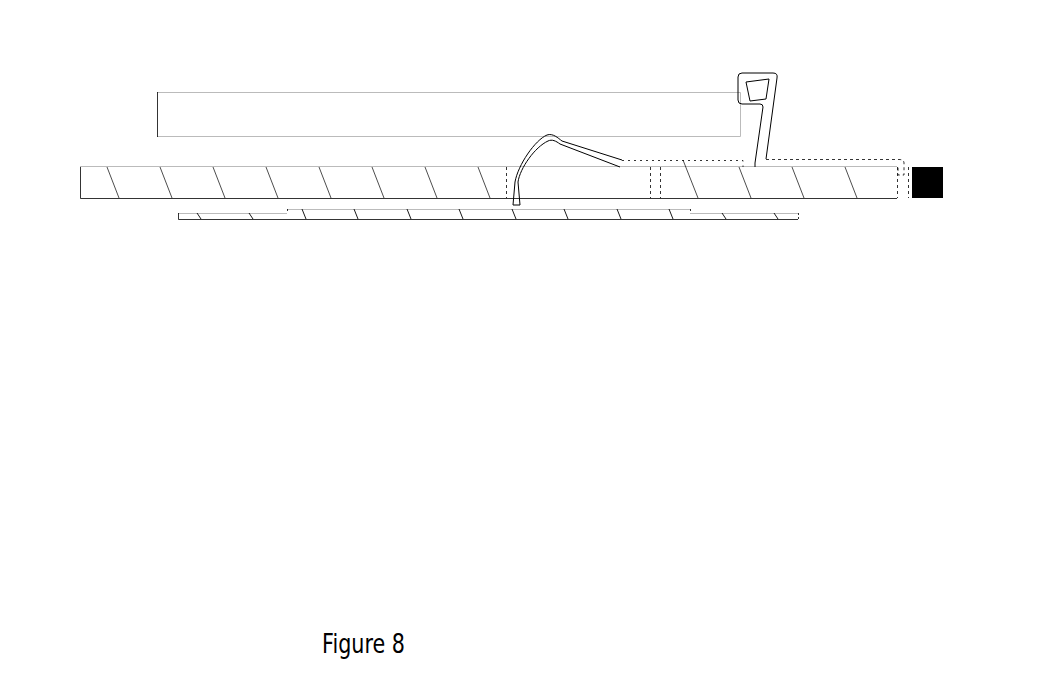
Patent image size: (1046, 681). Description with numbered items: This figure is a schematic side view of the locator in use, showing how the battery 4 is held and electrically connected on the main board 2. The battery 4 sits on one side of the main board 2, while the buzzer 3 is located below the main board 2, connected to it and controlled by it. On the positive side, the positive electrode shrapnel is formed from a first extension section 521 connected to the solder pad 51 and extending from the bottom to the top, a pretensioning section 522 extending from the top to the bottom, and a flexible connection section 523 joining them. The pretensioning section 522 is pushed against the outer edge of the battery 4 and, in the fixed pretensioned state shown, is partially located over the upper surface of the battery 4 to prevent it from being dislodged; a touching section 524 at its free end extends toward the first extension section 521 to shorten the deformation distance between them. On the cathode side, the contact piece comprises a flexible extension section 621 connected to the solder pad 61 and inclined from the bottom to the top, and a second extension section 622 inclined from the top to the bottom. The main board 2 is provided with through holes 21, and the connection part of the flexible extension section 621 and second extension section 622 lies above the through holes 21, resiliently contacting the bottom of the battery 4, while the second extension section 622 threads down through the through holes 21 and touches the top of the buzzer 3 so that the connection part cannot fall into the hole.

The main board 2 is at (143, 182).
The buzzer 3 is at (332, 215).
The battery 4 is at (405, 92).
The through holes 21 is at (555, 185).
The solder pad 51 is at (883, 163).
The solder pad 61 is at (686, 161).
The first extension section 521 is at (764, 127).
The pretensioning section 522 is at (738, 76).
The flexible connection section 523 is at (757, 74).
The touching section 524 is at (768, 81).
The flexible extension section 621 is at (600, 160).
The second extension section 622 is at (510, 182).